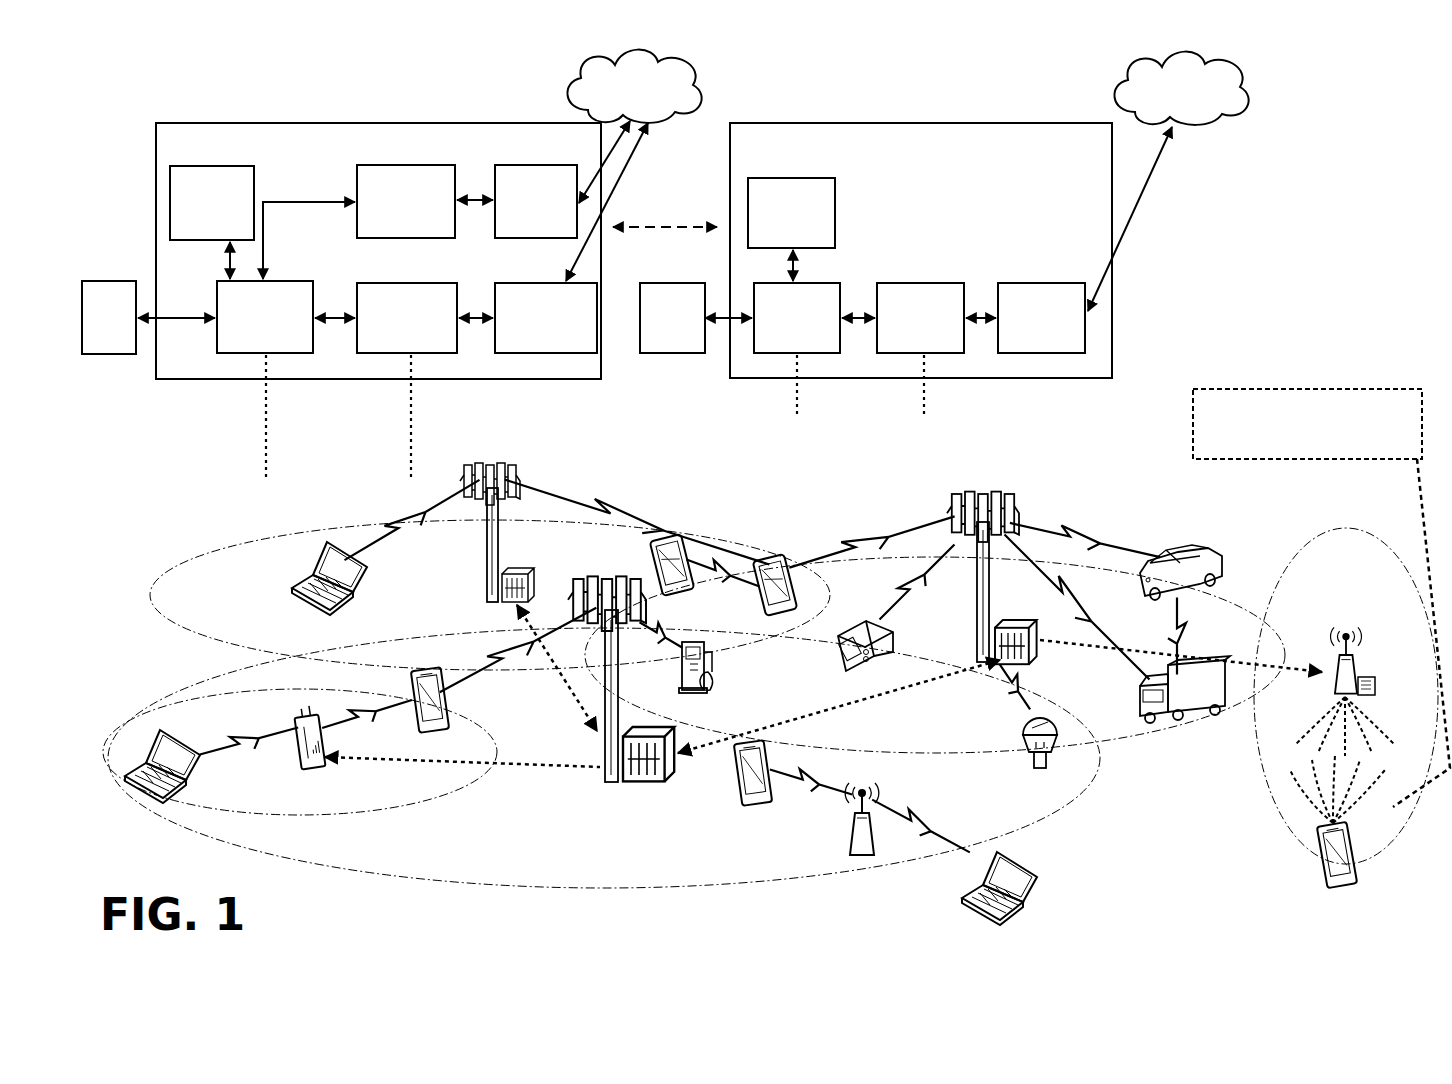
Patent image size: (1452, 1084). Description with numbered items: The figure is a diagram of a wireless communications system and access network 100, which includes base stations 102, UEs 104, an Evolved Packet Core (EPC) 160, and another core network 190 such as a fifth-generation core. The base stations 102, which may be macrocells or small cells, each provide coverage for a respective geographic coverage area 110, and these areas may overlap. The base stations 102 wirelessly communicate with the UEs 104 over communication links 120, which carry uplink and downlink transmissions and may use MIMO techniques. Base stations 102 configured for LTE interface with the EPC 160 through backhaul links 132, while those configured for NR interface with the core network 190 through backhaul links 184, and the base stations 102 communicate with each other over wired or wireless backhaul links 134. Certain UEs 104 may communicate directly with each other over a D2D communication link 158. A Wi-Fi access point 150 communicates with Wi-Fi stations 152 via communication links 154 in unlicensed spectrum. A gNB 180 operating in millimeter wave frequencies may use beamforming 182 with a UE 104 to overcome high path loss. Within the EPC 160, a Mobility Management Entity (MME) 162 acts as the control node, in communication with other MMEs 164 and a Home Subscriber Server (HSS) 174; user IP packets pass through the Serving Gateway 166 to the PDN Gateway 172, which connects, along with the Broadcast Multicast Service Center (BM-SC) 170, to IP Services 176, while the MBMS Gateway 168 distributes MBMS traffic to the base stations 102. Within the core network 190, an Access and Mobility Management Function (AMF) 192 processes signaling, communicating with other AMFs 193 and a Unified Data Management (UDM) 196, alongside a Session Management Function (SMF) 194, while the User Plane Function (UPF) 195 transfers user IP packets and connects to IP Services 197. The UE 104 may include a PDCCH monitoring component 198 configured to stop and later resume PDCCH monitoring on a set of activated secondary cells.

The wireless communications system and access network 100 is at (150, 102).
The base station 102 is at (487, 586).
The UE 104 is at (351, 606).
The geographic coverage area 110 is at (212, 640).
The communication link 120 is at (410, 512).
The backhaul link 132 is at (268, 386).
The backhaul link 134 is at (566, 702).
The Wi-Fi access point 150 is at (861, 858).
The Wi-Fi station 152 is at (736, 785).
The communication link 154 is at (814, 776).
The D2D communication link 158 is at (741, 590).
The Evolved Packet Core 160 is at (378, 251).
The Mobility Management Entity 162 is at (279, 281).
The other MMEs 164 is at (190, 166).
The Serving Gateway 166 is at (423, 283).
The MBMS Gateway 168 is at (399, 165).
The Broadcast Multicast Service Center 170 is at (536, 166).
The PDN Gateway 172 is at (539, 283).
The Home Subscriber Server 174 is at (113, 281).
The IP Services 176 is at (709, 89).
The gNB 180 is at (1345, 604).
The beamforming 182 is at (1305, 742).
The backhaul link 184 is at (799, 382).
The core network 190 is at (921, 250).
The Access and Mobility Management Function 192 is at (812, 283).
The other AMFs 193 is at (790, 178).
The Session Management Function 194 is at (939, 283).
The User Plane Function 195 is at (1066, 283).
The Unified Data Management 196 is at (685, 283).
The IP Services 197 is at (1246, 88).
The PDCCH monitoring component 198 is at (1326, 389).